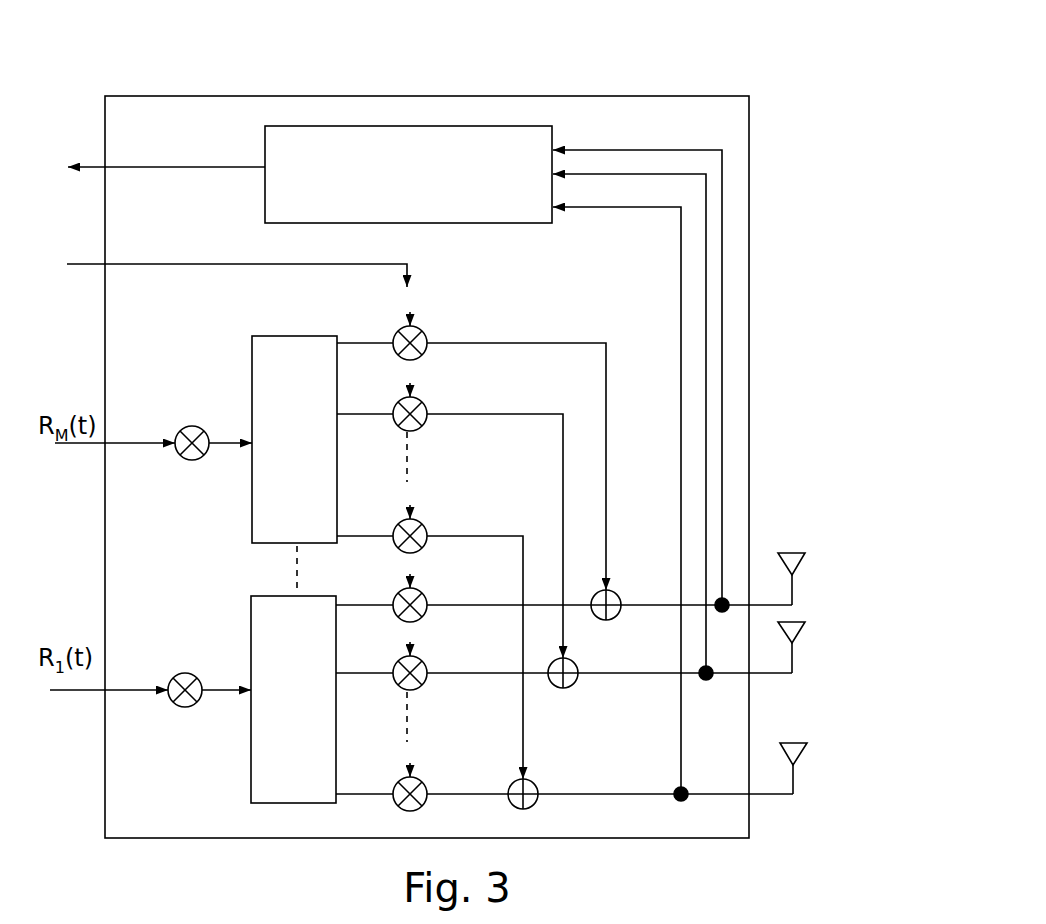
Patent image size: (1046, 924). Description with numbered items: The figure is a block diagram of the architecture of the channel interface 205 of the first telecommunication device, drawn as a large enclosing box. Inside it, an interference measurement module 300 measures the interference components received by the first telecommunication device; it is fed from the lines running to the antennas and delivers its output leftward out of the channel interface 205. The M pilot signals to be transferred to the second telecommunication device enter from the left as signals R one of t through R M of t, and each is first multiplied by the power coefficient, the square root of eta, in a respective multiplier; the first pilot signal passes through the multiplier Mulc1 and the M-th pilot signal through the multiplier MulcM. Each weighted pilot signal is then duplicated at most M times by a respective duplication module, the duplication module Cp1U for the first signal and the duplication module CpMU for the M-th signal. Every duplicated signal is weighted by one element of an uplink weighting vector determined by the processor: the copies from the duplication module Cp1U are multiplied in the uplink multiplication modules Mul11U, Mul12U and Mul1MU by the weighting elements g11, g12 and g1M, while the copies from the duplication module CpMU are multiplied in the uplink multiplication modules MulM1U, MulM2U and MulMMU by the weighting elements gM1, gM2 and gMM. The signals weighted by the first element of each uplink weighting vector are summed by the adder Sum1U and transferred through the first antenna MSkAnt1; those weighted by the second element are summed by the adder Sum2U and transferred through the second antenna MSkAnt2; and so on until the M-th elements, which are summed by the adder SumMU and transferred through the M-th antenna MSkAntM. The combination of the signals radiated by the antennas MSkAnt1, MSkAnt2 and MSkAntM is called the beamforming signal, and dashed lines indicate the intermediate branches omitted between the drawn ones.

The channel interface 205 is at (350, 96).
The interference measurement module 300 is at (500, 123).
The duplication module CpMU is at (312, 336).
The duplication module Cp1U is at (254, 628).
The multiplier MulcM is at (196, 460).
The multiplier Mulc1 is at (189, 707).
The uplink multiplication module MulM1U is at (424, 338).
The uplink multiplication module MulM2U is at (424, 409).
The uplink multiplication module MulMMU is at (424, 531).
The uplink multiplication module Mul11U is at (424, 600).
The uplink multiplication module Mul12U is at (424, 668).
The uplink multiplication module Mul1MU is at (424, 789).
The uplink weighting vector element gM1 is at (411, 308).
The uplink weighting vector element gM2 is at (411, 379).
The uplink weighting vector element gMM is at (413, 502).
The uplink weighting vector element g11 is at (410, 571).
The uplink weighting vector element g12 is at (410, 639).
The uplink weighting vector element g1M is at (411, 760).
The uplink summation module Sum1U is at (618, 595).
The uplink summation module Sum2U is at (575, 664).
The uplink summation module SumMU is at (536, 788).
The first antenna MSkAnt1 is at (835, 536).
The second antenna MSkAnt2 is at (800, 622).
The M-th antenna MSkAntM is at (833, 715).